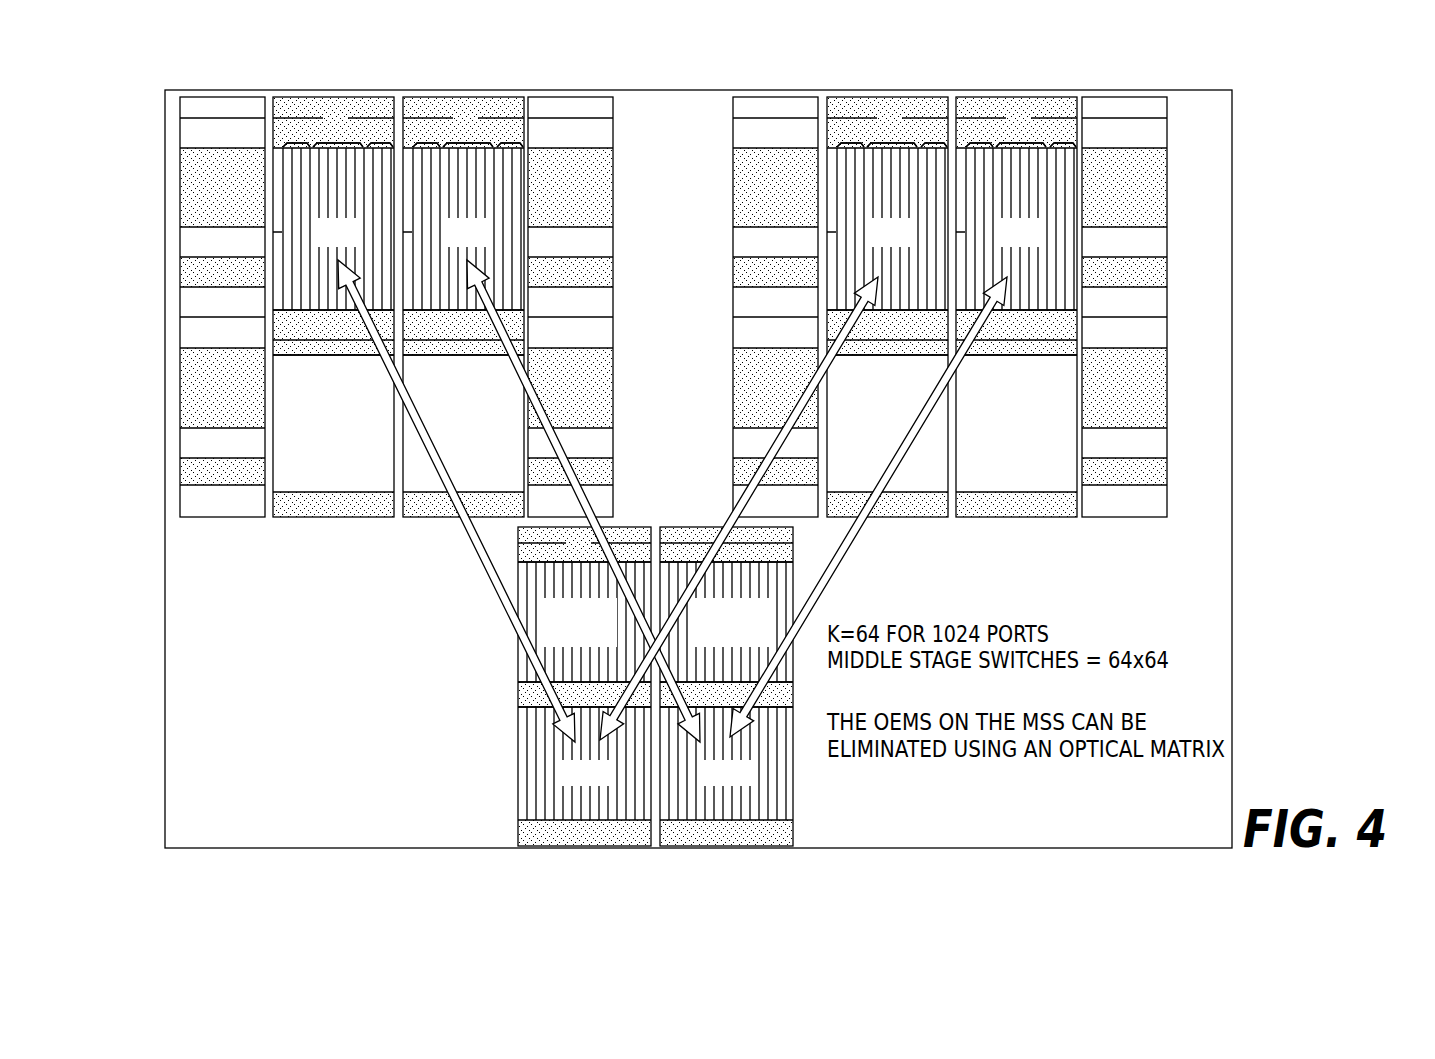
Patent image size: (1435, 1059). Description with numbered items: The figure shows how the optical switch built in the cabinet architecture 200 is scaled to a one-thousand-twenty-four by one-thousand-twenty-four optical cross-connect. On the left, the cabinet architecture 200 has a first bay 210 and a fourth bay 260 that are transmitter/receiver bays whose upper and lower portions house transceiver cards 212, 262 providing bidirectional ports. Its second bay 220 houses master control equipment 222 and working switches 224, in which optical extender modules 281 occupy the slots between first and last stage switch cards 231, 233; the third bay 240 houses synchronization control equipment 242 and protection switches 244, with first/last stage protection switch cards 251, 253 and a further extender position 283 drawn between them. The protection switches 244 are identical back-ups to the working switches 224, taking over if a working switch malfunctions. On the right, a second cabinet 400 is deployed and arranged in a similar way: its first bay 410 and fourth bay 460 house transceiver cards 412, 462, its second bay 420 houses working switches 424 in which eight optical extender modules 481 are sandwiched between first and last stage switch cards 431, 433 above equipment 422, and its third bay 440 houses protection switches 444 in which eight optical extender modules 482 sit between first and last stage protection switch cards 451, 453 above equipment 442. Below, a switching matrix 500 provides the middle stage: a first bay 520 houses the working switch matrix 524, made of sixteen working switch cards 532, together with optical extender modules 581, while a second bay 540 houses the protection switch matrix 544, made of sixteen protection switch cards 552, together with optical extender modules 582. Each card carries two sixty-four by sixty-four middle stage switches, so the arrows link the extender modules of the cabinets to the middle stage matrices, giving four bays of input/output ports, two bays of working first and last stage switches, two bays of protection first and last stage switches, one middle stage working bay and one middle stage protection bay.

The cabinet architecture 200 is at (175, 103).
The first bay 210 is at (203, 112).
The transceiver cards 212 is at (238, 217).
The second bay 220 is at (308, 103).
The master control equipment 222 is at (352, 447).
The working switches 224 is at (351, 337).
The first and last stage switch cards 231 is at (340, 132).
The first and last stage switch cards 233 is at (378, 130).
The third bay 240 is at (517, 102).
The synchronization control equipment 242 is at (481, 447).
The protection switches 244 is at (480, 337).
The first/last stage protection switch cards 251 is at (425, 130).
The first/last stage protection switch cards 253 is at (510, 132).
The fourth bay 260 is at (612, 84).
The transceiver cards 262 is at (590, 217).
The optical extender modules 281 is at (298, 128).
The connection 283 is at (467, 132).
The second cabinet 400 is at (1193, 118).
The first bay 410 is at (737, 102).
The transceiver cards 412 is at (792, 217).
The second bay 420 is at (865, 102).
The switch circuit module 422 is at (906, 447).
The working switches 424 is at (904, 337).
The first and last stage switch cards 431 is at (850, 132).
The first and last stage switch cards 433 is at (933, 130).
The third bay 440 is at (1068, 102).
The switch circuit module 442 is at (1034, 447).
The protection switches 444 is at (1033, 337).
The first and last stage protection switch cards 451 is at (980, 130).
The first and last stage protection switch cards 453 is at (1062, 132).
The fourth bay 460 is at (1148, 102).
The transceiver cards 462 is at (1143, 217).
The optical extender modules 481 is at (893, 132).
The optical extender modules 482 is at (1022, 132).
The switching matrix 500 is at (378, 660).
The first bay 520 is at (632, 526).
The working switch matrix 524 is at (528, 657).
The working switch cards 532 is at (557, 563).
The second bay 540 is at (688, 526).
The protection switch matrix 544 is at (793, 652).
The protection switch cards 552 is at (793, 549).
The optical extender modules 581 is at (518, 783).
The optical extender modules 582 is at (793, 782).